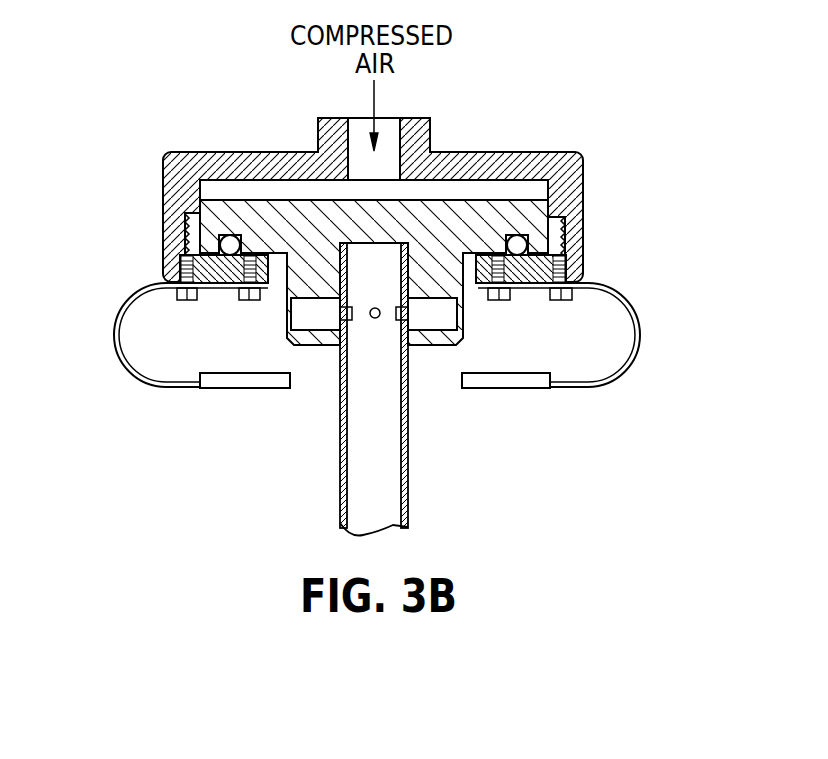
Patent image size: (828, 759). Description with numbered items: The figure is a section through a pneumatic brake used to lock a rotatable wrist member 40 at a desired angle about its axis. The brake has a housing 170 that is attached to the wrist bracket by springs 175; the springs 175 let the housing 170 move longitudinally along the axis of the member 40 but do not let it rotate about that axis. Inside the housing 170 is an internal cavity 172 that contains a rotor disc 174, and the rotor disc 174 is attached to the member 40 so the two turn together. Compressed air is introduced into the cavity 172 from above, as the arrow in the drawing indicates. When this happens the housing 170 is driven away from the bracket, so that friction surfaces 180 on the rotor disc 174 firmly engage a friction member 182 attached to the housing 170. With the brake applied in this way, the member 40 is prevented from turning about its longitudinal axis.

The member 40 is at (410, 470).
The housing 170 is at (450, 152).
The internal cavity 172 is at (272, 190).
The rotor disc 174 is at (497, 210).
The springs 175 is at (114, 327).
The friction surfaces 180 is at (535, 255).
The friction member 182 is at (540, 270).